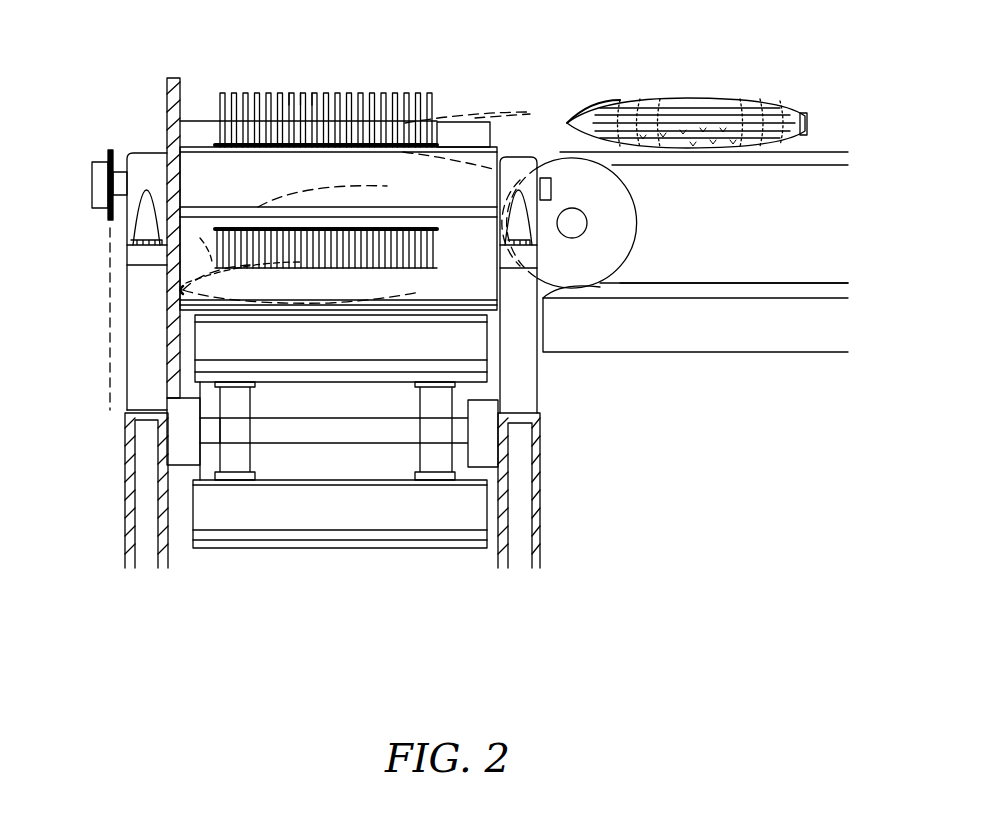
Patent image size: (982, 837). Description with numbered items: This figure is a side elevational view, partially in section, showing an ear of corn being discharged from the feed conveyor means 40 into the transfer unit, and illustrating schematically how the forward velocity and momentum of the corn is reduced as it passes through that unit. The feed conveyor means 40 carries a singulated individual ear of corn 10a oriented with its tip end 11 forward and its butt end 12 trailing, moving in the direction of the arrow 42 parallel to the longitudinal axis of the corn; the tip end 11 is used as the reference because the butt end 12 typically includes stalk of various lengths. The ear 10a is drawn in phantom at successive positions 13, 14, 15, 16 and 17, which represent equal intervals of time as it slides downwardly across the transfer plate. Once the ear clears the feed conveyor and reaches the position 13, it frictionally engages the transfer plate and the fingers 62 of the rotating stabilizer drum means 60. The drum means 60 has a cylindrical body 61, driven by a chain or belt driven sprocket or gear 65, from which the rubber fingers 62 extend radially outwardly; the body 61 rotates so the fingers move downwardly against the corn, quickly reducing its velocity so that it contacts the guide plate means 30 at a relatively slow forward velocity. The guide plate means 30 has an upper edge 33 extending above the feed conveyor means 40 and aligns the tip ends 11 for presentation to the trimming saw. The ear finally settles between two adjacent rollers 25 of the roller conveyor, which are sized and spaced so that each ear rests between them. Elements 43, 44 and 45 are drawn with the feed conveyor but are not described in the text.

The individual ear of corn 10a is at (608, 85).
The tip end 11 is at (575, 105).
The butt end 12 is at (800, 108).
The phantom position 13 is at (258, 207).
The phantom position 14 is at (205, 243).
The phantom position 15 is at (180, 265).
The phantom position 16 is at (190, 283).
The phantom position 17 is at (185, 293).
The rollers 25 is at (480, 355).
The guide plate means 30 is at (166, 85).
The upper edge 33 is at (177, 78).
The feed conveyor means 40 is at (830, 147).
The arrow 42 is at (620, 68).
The conveyor belt 43 is at (718, 292).
The roller 44 is at (575, 275).
The roller shaft 45 is at (578, 220).
The rotating stabilizer drum means 60 is at (383, 83).
The cylindrical body 61 is at (198, 147).
The fingers 62 is at (312, 93).
The sprocket or gear 65 is at (94, 172).